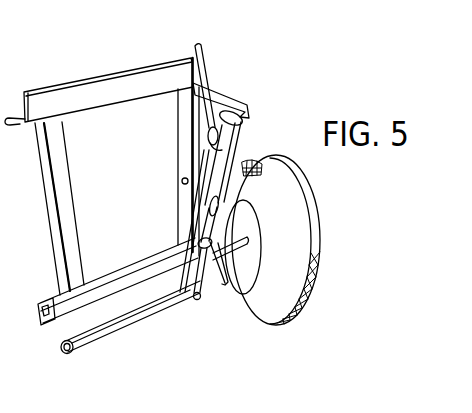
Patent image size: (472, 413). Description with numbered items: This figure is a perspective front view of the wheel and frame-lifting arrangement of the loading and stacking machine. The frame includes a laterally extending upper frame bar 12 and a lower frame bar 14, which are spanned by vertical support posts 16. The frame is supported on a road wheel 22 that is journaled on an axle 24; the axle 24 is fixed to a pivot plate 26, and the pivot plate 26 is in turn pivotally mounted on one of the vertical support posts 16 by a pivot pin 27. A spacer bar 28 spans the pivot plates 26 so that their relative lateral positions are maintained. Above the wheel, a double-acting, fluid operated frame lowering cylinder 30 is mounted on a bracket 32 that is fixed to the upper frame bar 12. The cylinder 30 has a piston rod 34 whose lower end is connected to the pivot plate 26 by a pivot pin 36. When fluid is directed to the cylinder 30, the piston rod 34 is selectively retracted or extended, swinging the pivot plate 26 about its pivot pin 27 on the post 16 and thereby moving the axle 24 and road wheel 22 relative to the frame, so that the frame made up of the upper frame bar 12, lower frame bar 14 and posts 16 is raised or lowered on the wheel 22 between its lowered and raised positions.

The upper frame bar 12 is at (120, 80).
The lower frame bar 14 is at (135, 264).
The vertical support posts 16 is at (72, 196).
The road wheels 22 is at (304, 222).
The axles 24 is at (231, 243).
The pivot plates 26 is at (219, 284).
The pivot pins 27 is at (182, 184).
The spacer bar 28 is at (82, 334).
The frame lowering cylinders 30 is at (247, 165).
The brackets 32 is at (227, 97).
The piston rods 34 is at (180, 280).
The pivot pins 36 is at (194, 300).